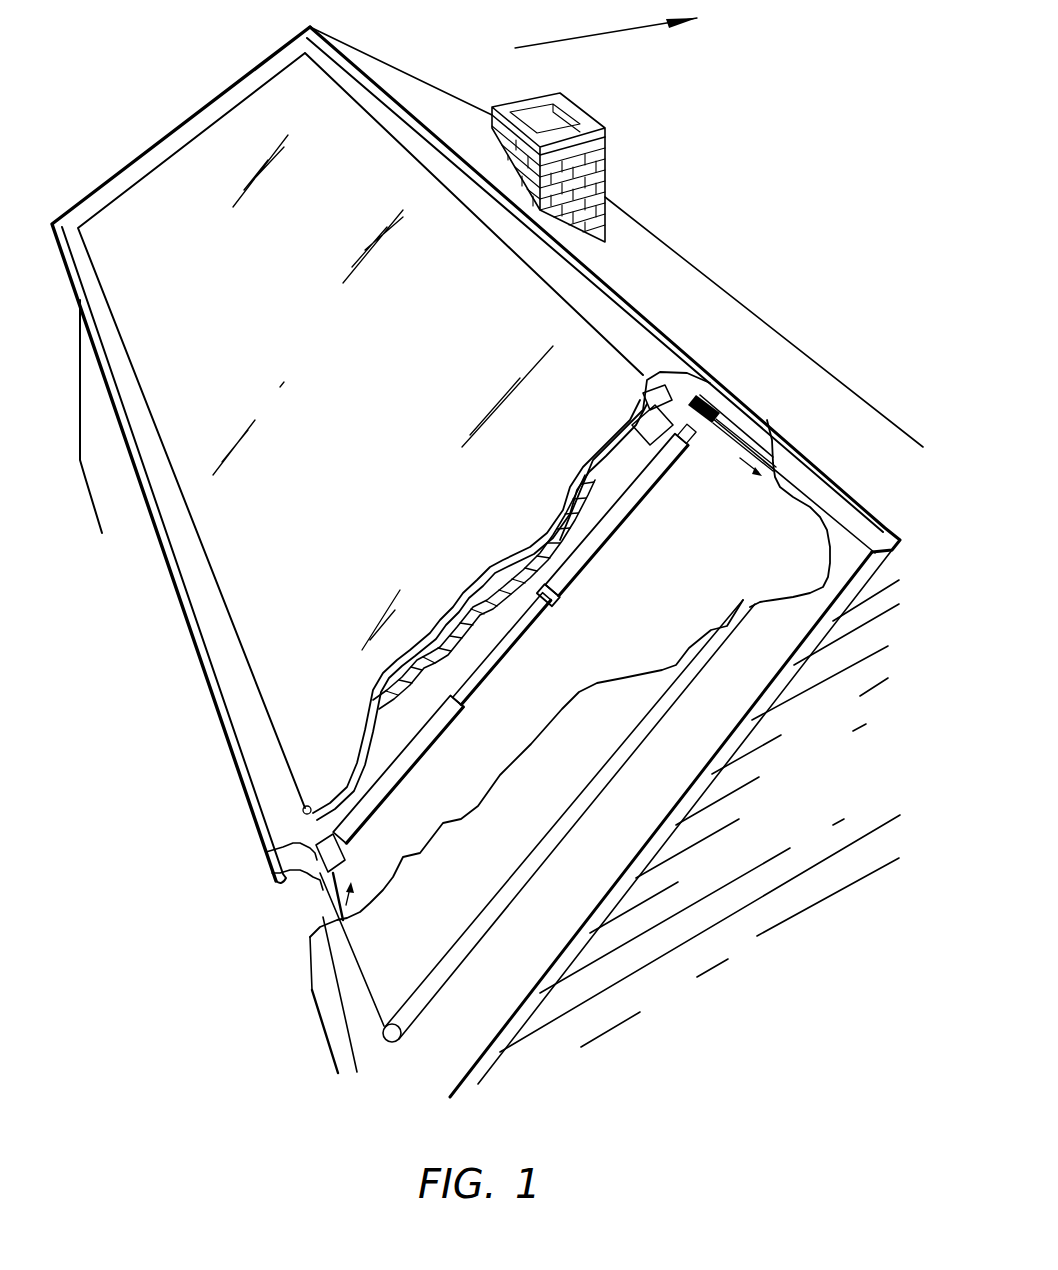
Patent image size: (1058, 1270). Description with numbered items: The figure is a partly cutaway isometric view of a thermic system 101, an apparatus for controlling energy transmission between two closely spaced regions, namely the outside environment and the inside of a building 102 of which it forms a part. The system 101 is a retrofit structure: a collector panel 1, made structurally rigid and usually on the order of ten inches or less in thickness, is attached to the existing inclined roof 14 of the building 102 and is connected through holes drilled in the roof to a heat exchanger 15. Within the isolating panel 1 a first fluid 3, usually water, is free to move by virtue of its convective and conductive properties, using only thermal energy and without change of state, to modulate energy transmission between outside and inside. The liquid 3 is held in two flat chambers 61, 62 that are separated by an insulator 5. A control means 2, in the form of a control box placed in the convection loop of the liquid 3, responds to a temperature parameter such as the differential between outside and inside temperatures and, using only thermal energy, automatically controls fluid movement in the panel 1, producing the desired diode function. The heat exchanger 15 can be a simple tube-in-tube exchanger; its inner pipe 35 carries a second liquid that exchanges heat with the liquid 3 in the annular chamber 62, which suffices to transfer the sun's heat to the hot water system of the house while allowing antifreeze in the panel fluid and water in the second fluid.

The panel 1 is at (238, 594).
The control means 2 is at (670, 463).
The first fluid 3 is at (497, 555).
The insulator 5 is at (565, 500).
The roof 14 is at (347, 990).
The heat exchanger 15 is at (738, 443).
The inner pipe 35 is at (517, 633).
The flat chamber 61 is at (560, 500).
The flat chamber 62 is at (552, 598).
The thermic system 101 is at (280, 697).
The building 102 is at (768, 306).